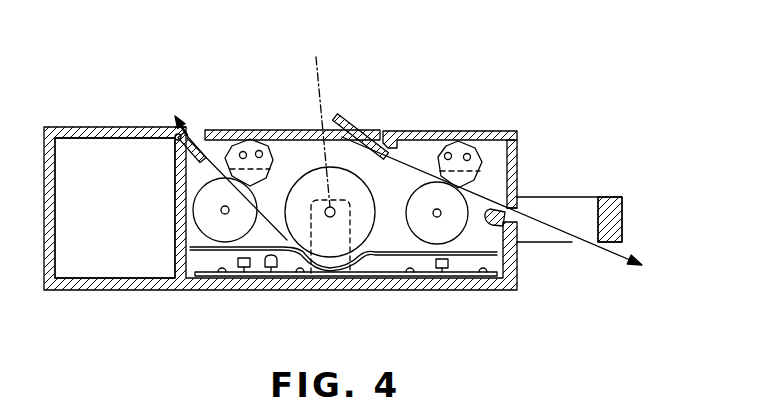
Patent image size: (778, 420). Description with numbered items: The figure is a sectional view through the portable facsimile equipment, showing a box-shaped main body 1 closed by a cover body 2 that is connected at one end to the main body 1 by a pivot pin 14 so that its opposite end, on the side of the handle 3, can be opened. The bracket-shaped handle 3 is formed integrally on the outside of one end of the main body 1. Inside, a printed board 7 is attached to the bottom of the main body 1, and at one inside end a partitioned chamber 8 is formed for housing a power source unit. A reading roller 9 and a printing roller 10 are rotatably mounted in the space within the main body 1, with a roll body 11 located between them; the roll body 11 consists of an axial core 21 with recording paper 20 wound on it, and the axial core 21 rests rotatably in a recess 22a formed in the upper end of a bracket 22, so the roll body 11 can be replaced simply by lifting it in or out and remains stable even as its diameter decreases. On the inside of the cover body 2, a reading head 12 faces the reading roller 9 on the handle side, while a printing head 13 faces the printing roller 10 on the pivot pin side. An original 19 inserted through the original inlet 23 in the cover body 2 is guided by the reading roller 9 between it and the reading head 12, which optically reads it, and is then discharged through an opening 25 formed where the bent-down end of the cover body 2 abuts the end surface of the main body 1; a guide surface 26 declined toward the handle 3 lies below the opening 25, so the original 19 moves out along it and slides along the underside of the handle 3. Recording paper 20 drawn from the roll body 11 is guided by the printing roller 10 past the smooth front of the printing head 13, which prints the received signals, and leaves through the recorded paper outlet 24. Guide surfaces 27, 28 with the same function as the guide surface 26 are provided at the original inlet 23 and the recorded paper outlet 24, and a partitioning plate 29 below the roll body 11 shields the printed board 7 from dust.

The main body 1 is at (190, 290).
The cover body 2 is at (460, 141).
The handle 3 is at (612, 220).
The printed board 7 is at (380, 256).
The partitioned chamber 8 is at (113, 262).
The reading roller 9 is at (430, 237).
The printing roller 10 is at (203, 207).
The roll body 11 is at (313, 168).
The reading head 12 is at (517, 153).
The printing head 13 is at (272, 147).
The pivot pin 14 is at (178, 130).
The original 19 is at (353, 128).
The recording paper 20 is at (230, 130).
The axial core 21 is at (334, 209).
The bracket 22 is at (350, 274).
The recess 22a is at (325, 122).
The original inlet 23 is at (382, 142).
The recorded paper outlet 24 is at (197, 128).
The opening 25 is at (516, 210).
The guide surface 26 is at (510, 223).
The guide surface 27 is at (367, 140).
The guide surface 28 is at (212, 132).
The partitioning plate 29 is at (466, 276).